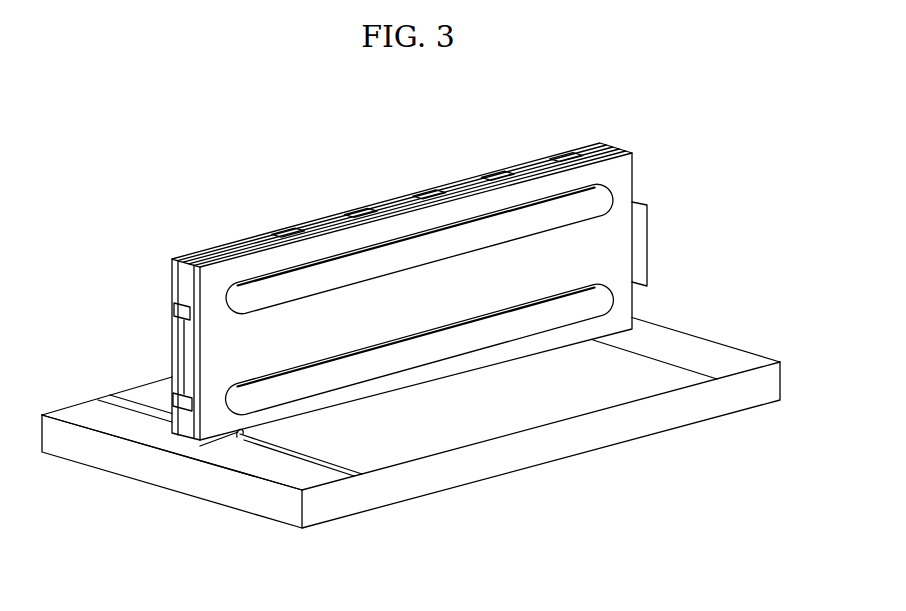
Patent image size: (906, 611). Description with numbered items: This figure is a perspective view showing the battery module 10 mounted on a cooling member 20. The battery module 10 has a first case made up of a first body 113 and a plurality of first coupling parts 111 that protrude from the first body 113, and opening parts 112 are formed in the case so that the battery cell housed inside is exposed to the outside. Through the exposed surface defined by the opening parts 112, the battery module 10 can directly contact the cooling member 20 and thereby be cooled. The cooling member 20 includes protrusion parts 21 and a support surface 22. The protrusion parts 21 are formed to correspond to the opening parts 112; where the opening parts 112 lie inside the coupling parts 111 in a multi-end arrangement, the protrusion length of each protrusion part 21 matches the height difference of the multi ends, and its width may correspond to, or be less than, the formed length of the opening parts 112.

The battery module 10 is at (353, 339).
The first coupling parts 111 is at (215, 438).
The opening parts 112 is at (478, 367).
The first body 113 is at (307, 314).
The cooling member 20 is at (411, 442).
The protrusion parts 21 is at (397, 447).
The support surface 22 is at (278, 467).